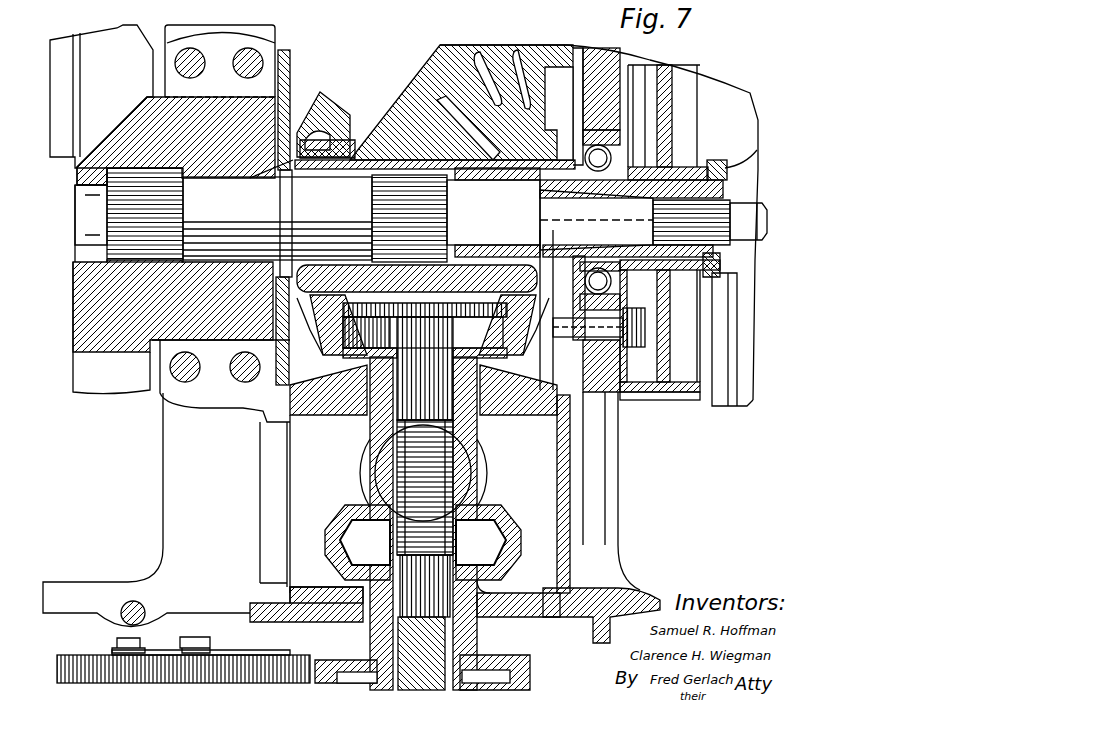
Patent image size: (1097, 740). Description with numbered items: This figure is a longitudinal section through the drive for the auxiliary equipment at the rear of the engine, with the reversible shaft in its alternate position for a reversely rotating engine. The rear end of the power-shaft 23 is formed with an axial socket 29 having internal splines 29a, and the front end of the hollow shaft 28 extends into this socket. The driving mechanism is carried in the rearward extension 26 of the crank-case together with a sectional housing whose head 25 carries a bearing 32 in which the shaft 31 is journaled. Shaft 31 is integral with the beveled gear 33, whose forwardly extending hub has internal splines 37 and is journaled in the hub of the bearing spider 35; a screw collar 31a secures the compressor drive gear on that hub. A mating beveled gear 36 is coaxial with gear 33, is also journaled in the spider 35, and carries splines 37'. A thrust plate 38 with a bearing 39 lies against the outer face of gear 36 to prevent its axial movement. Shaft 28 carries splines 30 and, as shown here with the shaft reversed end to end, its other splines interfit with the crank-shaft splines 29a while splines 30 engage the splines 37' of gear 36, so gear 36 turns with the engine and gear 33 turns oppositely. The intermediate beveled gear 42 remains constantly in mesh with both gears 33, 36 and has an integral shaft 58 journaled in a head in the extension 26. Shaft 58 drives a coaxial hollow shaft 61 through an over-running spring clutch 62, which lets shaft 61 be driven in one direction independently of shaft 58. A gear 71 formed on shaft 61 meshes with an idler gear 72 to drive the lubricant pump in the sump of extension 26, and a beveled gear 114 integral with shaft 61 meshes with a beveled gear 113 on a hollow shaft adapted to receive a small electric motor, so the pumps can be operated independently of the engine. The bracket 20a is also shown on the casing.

The power-shaft 23 is at (101, 209).
The mounting bracket 20a is at (226, 97).
The thrust plate 38 is at (287, 52).
The internal splines 29a is at (252, 172).
The bearing 39 is at (332, 128).
The bearing spider 35 is at (418, 104).
The mating beveled gear 36 is at (322, 110).
The splines 37' is at (342, 121).
The beveled gear 33 is at (547, 102).
The head 25 is at (614, 82).
The bearing 32 is at (620, 154).
The screw collar 31a is at (758, 148).
The axial socket 29 is at (118, 150).
The splines 30 is at (165, 211).
The hollow shaft 28 is at (277, 218).
The internal splines 37 is at (493, 218).
The shaft 31 is at (574, 254).
The beveled intermediate gear 42 is at (423, 311).
The integral shaft 58 is at (463, 386).
The over-running spring clutch 62 is at (455, 455).
The beveled gear 113 is at (490, 476).
The beveled gear 114 is at (497, 530).
The co-axial shaft 61 is at (480, 591).
The rearward extension 26 is at (185, 598).
The idler gear 72 is at (300, 665).
The gear 71 is at (530, 670).